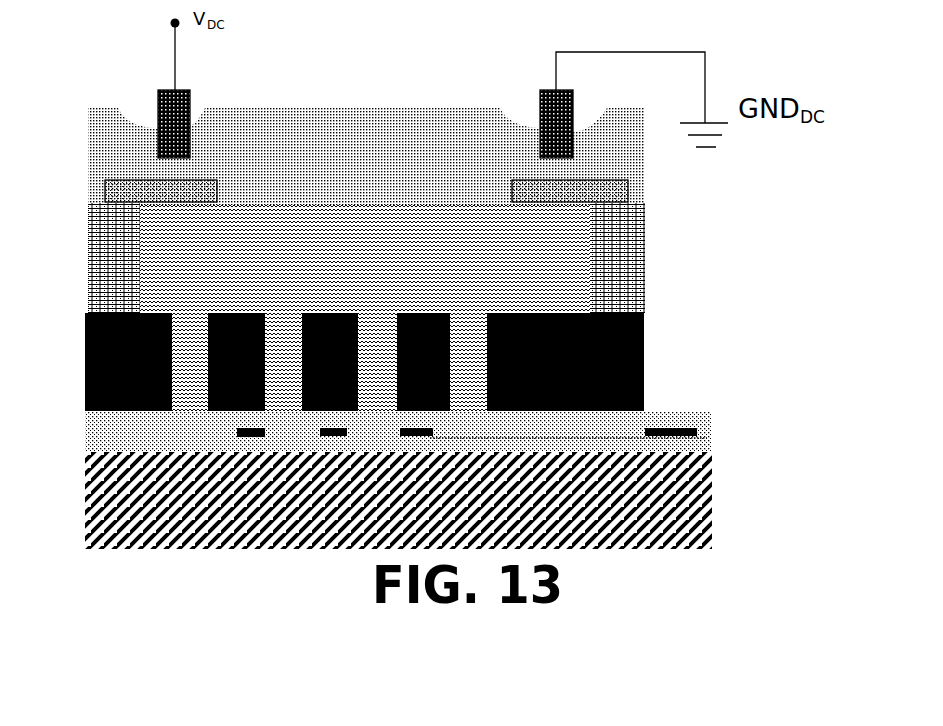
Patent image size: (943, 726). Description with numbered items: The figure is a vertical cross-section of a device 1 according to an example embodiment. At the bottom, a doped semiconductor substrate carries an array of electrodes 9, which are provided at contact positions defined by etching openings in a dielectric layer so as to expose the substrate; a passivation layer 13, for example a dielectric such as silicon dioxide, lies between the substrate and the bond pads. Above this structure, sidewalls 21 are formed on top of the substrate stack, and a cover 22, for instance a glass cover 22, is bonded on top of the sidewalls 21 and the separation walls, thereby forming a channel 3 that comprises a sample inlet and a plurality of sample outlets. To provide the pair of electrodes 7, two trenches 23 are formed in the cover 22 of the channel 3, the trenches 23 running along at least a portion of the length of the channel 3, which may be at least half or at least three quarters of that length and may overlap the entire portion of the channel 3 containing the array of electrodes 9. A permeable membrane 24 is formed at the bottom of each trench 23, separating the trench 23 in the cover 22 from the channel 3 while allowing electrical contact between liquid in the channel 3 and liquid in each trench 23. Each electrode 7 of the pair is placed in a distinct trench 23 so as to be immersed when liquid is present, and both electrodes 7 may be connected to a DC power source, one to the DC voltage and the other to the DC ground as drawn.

The device 1 is at (68, 176).
The channel 3 is at (365, 308).
The electrode 7 is at (190, 97).
The array of electrodes 9 is at (427, 313).
The passivation layer 13 is at (88, 425).
The sidewalls 21 is at (645, 272).
The cover 22 is at (388, 174).
The trench 23 is at (141, 106).
The permeable membrane 24 is at (628, 192).